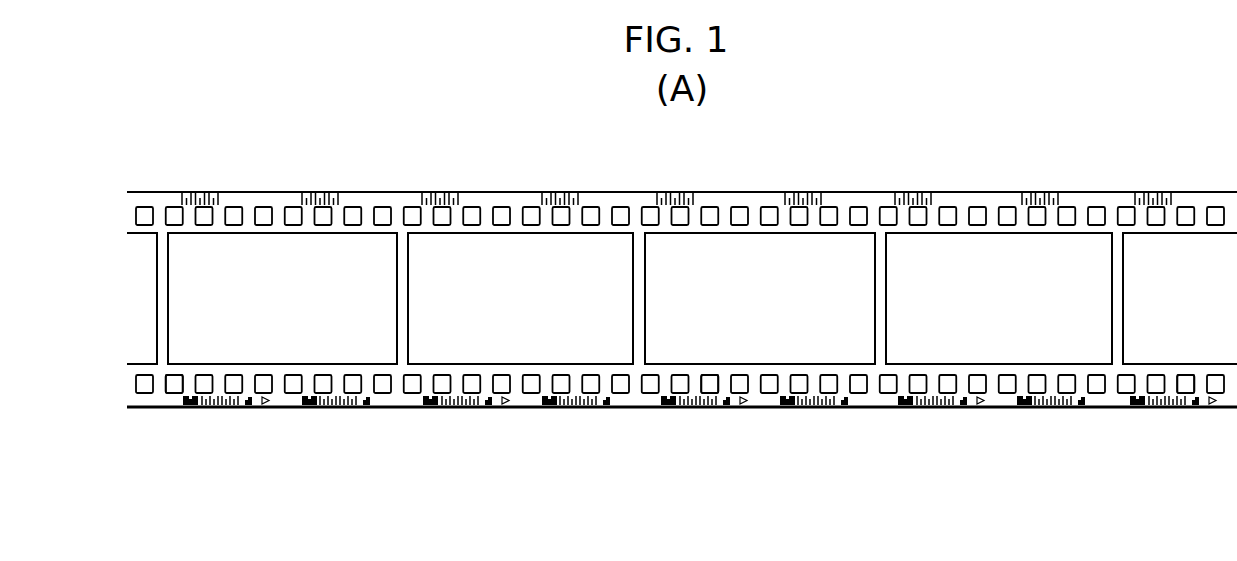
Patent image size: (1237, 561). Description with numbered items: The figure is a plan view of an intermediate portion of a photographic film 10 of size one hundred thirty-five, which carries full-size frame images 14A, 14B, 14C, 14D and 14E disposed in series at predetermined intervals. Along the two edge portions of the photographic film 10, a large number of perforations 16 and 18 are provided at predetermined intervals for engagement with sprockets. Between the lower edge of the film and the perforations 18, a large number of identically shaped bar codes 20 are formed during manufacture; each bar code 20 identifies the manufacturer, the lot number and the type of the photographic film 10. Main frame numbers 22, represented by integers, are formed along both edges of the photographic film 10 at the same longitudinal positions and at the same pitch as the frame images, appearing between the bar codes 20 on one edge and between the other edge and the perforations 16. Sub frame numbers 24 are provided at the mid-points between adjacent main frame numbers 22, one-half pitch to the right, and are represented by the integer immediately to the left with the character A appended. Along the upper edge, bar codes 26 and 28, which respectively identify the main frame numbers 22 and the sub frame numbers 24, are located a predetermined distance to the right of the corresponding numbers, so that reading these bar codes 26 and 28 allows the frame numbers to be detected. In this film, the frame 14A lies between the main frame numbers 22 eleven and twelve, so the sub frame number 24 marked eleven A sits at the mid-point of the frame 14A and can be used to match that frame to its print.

The photographic film 10 is at (978, 190).
The frame image 14A is at (252, 303).
The frame image 14B is at (490, 303).
The frame image 14C is at (730, 303).
The frame image 14D is at (965, 303).
The frame image 14E is at (1147, 303).
The perforation 16 is at (263, 210).
The perforation 18 is at (177, 383).
The bar code 20 is at (217, 398).
The main frame number 22 is at (165, 192).
The sub frame number 24 is at (280, 398).
The bar code 26 is at (210, 192).
The bar code 28 is at (323, 192).